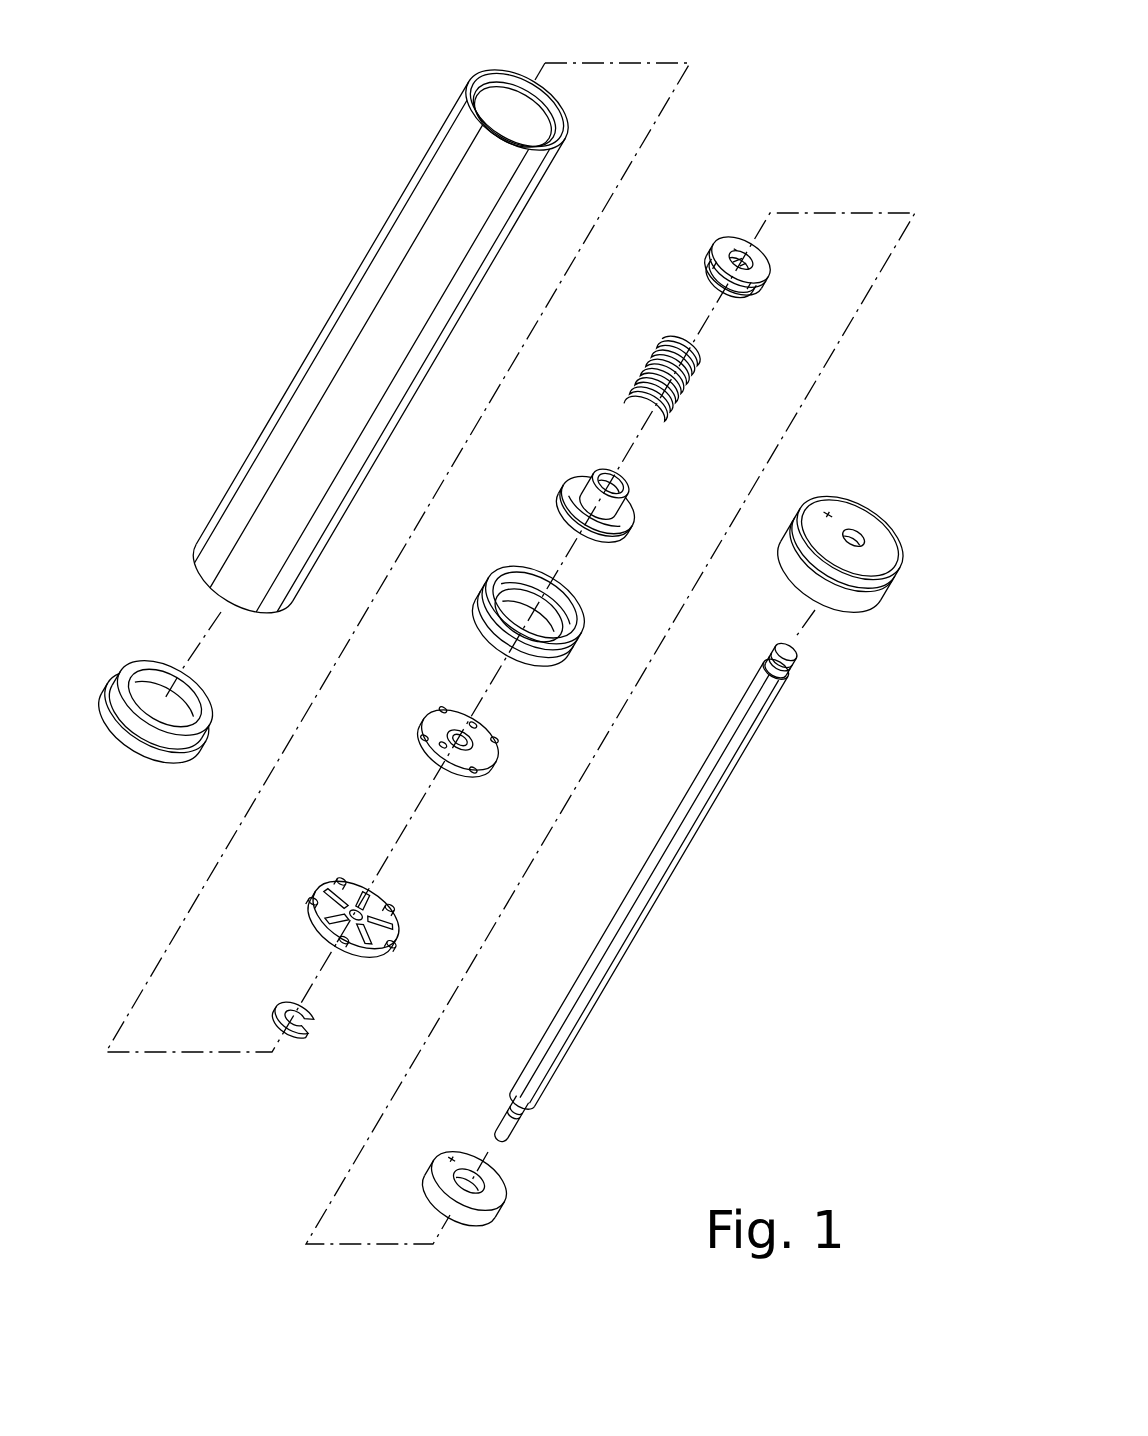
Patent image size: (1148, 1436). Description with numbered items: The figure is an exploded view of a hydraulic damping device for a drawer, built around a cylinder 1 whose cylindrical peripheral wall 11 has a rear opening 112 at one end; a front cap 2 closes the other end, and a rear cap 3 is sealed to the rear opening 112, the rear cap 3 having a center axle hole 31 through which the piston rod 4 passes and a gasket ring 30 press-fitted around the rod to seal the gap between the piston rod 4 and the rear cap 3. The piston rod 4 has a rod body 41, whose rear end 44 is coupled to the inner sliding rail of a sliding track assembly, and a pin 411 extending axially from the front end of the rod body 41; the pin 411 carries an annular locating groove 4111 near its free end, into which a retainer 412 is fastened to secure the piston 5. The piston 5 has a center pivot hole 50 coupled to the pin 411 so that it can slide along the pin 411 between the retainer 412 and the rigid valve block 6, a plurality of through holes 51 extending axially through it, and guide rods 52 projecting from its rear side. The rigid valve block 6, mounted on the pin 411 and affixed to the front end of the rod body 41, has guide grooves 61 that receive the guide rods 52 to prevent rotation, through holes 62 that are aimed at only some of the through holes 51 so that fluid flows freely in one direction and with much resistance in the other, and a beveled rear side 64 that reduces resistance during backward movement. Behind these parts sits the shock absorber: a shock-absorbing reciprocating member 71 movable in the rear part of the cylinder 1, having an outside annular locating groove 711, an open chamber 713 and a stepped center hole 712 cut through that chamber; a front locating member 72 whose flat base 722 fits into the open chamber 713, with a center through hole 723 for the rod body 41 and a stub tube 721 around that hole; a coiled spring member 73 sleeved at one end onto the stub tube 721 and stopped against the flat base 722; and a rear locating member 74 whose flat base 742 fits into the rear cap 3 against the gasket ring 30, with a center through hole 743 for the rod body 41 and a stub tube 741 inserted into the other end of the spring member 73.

The cylinder 1 is at (327, 278).
The cylindrical peripheral wall 11 is at (500, 108).
The rear opening 112 is at (547, 110).
The front cap 2 is at (212, 673).
The rear cap 3 is at (797, 595).
The center axle hole 31 is at (857, 530).
The gasket ring 30 is at (495, 1213).
The piston rod 4 is at (646, 916).
The rod body 41 is at (710, 755).
The rear end 44 is at (767, 665).
The pin 411 is at (518, 1122).
The annular locating groove 4111 is at (508, 1138).
The retainer 412 is at (313, 1033).
The piston 5 is at (305, 897).
The center pivot hole 50 is at (357, 900).
The through holes 51 is at (373, 880).
The guide rods 52 is at (345, 872).
The rigid valve block 6 is at (412, 723).
The guide grooves 61 is at (447, 715).
The through holes 62 is at (473, 725).
The rear side 64 is at (478, 752).
The shock-absorbing reciprocating member 71 is at (557, 653).
The outside annular locating groove 711 is at (513, 635).
The stepped center hole 712 is at (547, 615).
The open chamber 713 is at (535, 587).
The front locating member 72 is at (620, 510).
The stub tube 721 is at (603, 510).
The flat base 722 is at (577, 485).
The center through hole 723 is at (617, 480).
The spring member 73 is at (683, 393).
The rear locating member 74 is at (710, 275).
The stub tube 741 is at (718, 288).
The flat base 742 is at (757, 282).
The center through hole 743 is at (747, 262).